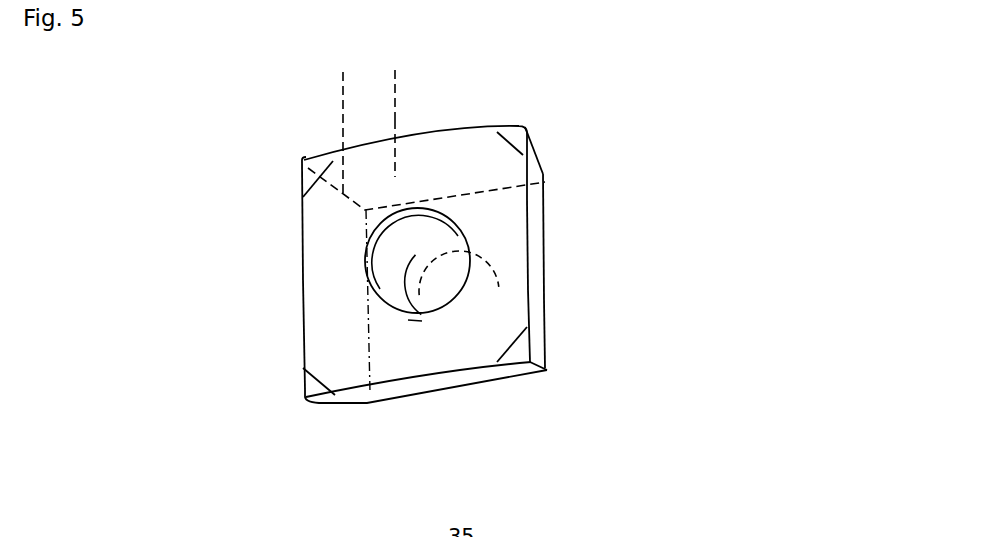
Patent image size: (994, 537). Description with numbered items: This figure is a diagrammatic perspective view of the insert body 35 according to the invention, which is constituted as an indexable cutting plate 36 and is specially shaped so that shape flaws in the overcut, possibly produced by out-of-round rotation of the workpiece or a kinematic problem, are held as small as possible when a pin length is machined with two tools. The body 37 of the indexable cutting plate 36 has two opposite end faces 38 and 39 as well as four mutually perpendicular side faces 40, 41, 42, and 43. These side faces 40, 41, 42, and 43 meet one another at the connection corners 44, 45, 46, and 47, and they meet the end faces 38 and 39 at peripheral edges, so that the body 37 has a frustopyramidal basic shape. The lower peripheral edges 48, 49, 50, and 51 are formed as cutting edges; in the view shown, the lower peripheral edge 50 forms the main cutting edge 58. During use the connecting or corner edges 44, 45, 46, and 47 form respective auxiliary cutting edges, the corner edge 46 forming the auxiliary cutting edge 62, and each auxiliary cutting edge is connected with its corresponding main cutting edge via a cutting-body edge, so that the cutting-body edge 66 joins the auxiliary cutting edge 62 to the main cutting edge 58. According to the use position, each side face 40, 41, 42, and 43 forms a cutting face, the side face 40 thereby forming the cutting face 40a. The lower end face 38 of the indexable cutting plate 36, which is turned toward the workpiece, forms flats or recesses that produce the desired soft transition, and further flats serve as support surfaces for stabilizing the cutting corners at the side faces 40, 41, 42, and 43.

The insert body 35 is at (445, 84).
The indexable cutting plate 36 is at (510, 207).
The body 37 is at (348, 322).
The end face 38 is at (483, 168).
The end face 39 is at (388, 330).
The side face 40 is at (396, 96).
The cutting face 40a is at (397, 82).
The side face 41 is at (333, 265).
The side face 42 is at (477, 377).
The side face 43 is at (538, 257).
The connection corner 44 is at (343, 122).
The connection corner 45 is at (337, 405).
The connection corner 46 is at (545, 368).
The connection corner 47 is at (540, 157).
The lower peripheral edge 48 is at (302, 310).
The lower peripheral edge 49 is at (428, 380).
The lower peripheral edge 50 is at (527, 282).
The lower peripheral edge 51 is at (453, 135).
The cutting edge 58 is at (529, 326).
The auxiliary cutting edge 62 is at (550, 358).
The cutting-body edge 66 is at (547, 343).